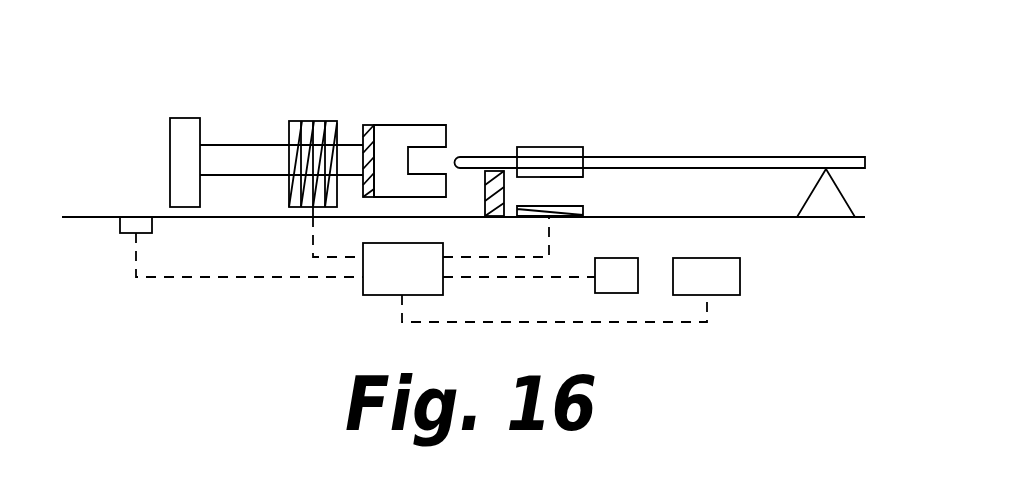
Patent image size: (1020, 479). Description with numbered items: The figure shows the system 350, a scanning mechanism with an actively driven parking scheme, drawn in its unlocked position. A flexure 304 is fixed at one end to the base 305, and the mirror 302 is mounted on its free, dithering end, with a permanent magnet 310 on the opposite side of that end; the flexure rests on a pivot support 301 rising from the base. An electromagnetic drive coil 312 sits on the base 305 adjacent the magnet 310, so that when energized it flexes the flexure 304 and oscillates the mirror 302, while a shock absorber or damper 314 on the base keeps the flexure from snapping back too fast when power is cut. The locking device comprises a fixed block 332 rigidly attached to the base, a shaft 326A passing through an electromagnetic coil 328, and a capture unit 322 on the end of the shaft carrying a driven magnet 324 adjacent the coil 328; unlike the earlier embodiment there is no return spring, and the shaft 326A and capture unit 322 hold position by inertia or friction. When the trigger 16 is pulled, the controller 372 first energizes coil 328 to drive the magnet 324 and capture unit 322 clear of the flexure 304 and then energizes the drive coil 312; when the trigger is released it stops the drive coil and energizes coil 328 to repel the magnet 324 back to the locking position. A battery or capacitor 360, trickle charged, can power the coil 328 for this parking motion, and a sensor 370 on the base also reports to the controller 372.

The trigger 16 is at (616, 277).
The pivot support 301 is at (822, 185).
The mirror 302 is at (548, 147).
The flexure 304 is at (677, 163).
The base 305 is at (730, 217).
The permanent magnet 310 is at (575, 178).
The electromagnetic drive coil 312 is at (565, 201).
The shock absorber or damper 314 is at (485, 196).
The capture unit 322 is at (407, 125).
The driven magnet 324 is at (370, 125).
The shaft 326A is at (243, 157).
The electromagnetic coil 328 is at (313, 120).
The fixed block 332 is at (182, 158).
The system 350 is at (550, 62).
The battery or capacitor 360 is at (706, 276).
The sensor 370 is at (142, 225).
The controller 372 is at (403, 269).